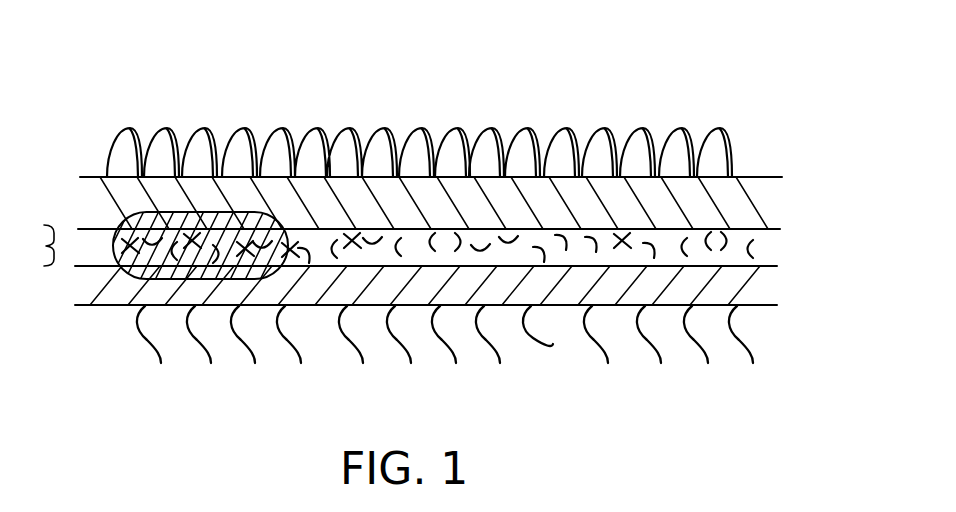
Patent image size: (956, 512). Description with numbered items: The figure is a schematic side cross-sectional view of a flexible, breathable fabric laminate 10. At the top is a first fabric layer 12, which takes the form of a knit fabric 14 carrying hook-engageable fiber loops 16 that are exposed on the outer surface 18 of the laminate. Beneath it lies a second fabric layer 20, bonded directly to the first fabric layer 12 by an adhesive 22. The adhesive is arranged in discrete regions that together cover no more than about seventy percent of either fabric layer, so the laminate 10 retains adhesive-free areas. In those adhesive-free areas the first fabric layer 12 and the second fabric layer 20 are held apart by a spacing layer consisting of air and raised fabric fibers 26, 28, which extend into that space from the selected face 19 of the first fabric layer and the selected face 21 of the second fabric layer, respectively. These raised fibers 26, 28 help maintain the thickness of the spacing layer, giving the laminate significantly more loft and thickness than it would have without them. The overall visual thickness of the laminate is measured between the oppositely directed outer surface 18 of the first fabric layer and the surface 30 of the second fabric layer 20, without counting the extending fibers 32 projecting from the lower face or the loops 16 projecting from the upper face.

The fabric laminate 10 is at (130, 98).
The first fabric layer 12 is at (64, 133).
The knit fabric 14 is at (765, 177).
The hook-engageable fiber loops 16 is at (278, 133).
The outer surface 18 is at (457, 167).
The selected face of the first fabric layer 19 is at (332, 233).
The second fabric layer 20 is at (64, 267).
The selected face of the second fabric layer 21 is at (396, 263).
The adhesive 22 is at (111, 280).
The raised fabric fibers 26 is at (757, 257).
The raised fabric fibers 28 is at (757, 237).
The surface of the second fabric layer 30 is at (760, 306).
The extending fibers 32 is at (553, 344).